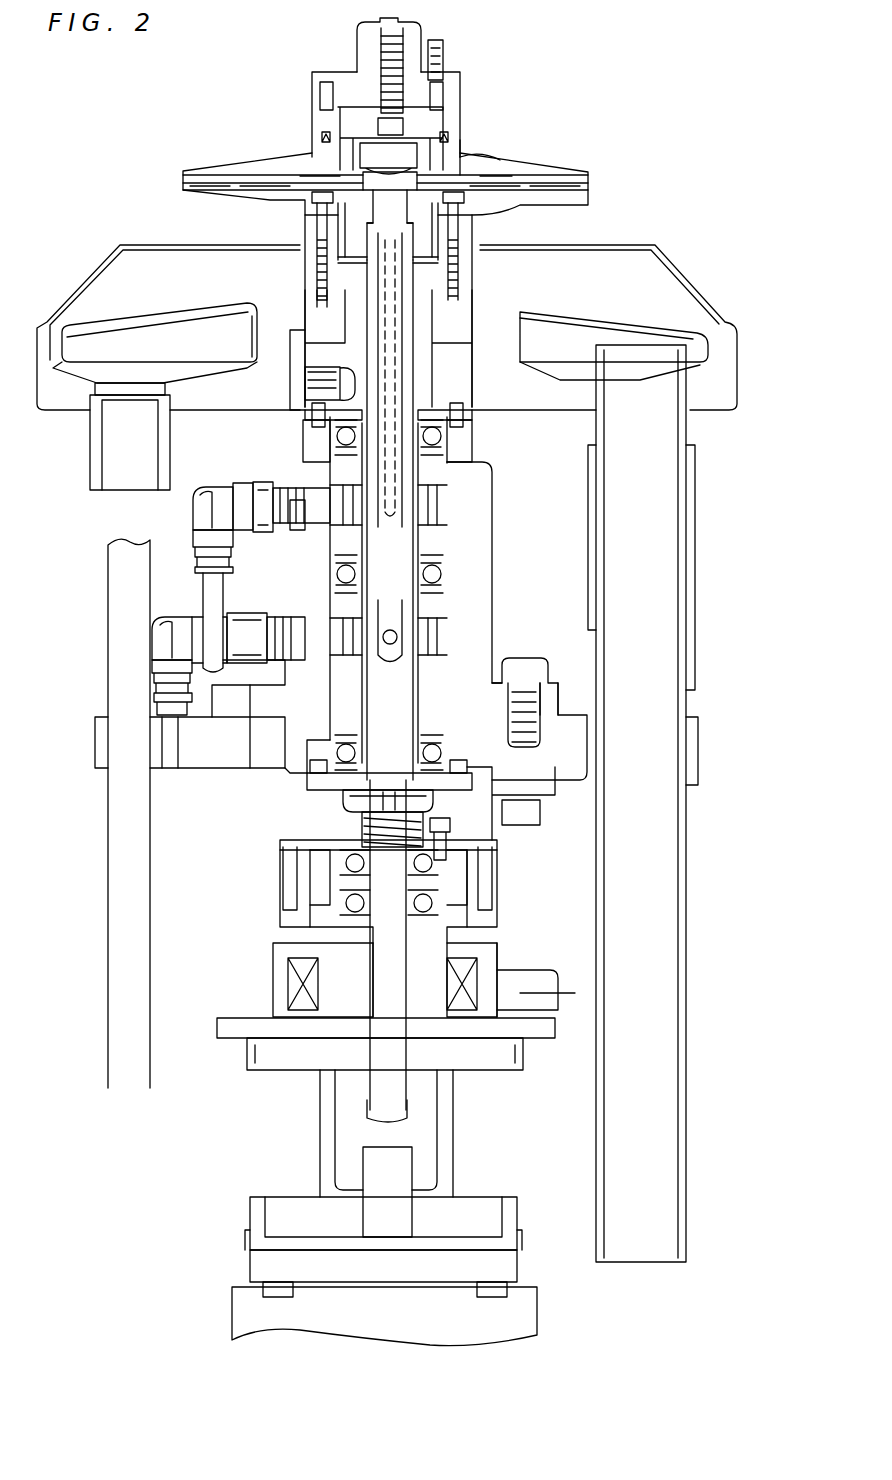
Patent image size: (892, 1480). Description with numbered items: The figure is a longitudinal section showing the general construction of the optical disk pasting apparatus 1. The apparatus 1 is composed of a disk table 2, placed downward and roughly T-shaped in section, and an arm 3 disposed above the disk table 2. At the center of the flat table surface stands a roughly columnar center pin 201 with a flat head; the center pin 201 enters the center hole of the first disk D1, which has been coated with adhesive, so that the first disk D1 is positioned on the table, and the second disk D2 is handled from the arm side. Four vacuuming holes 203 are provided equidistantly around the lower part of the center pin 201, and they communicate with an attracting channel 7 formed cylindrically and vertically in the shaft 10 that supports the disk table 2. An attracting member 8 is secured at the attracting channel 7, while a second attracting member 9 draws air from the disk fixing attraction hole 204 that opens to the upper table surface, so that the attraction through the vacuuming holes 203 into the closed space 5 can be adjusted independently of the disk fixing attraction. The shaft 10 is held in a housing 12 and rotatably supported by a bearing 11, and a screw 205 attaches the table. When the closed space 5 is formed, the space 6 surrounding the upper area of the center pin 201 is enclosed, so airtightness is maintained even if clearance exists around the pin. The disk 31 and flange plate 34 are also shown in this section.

The disk pasting apparatus 1 is at (732, 210).
The disk table 2 is at (475, 214).
The arm 3 is at (530, 165).
The closed space 5 is at (478, 160).
The space 6 is at (378, 172).
The attracting channel 7 is at (392, 478).
The attracting member 8 is at (210, 505).
The attracting member 9 is at (192, 632).
The shaft 10 is at (455, 598).
The bearing 11 is at (437, 575).
The housing 12 is at (468, 636).
The blade 31 is at (183, 182).
The flange plate 34 is at (238, 163).
The center pin 201 is at (372, 148).
The vacuuming holes 203 is at (388, 190).
The disk fixing attraction hole 204 is at (340, 232).
The screw 205 is at (318, 205).
The first disk D1 is at (512, 172).
The second diameter D2 is at (340, 176).